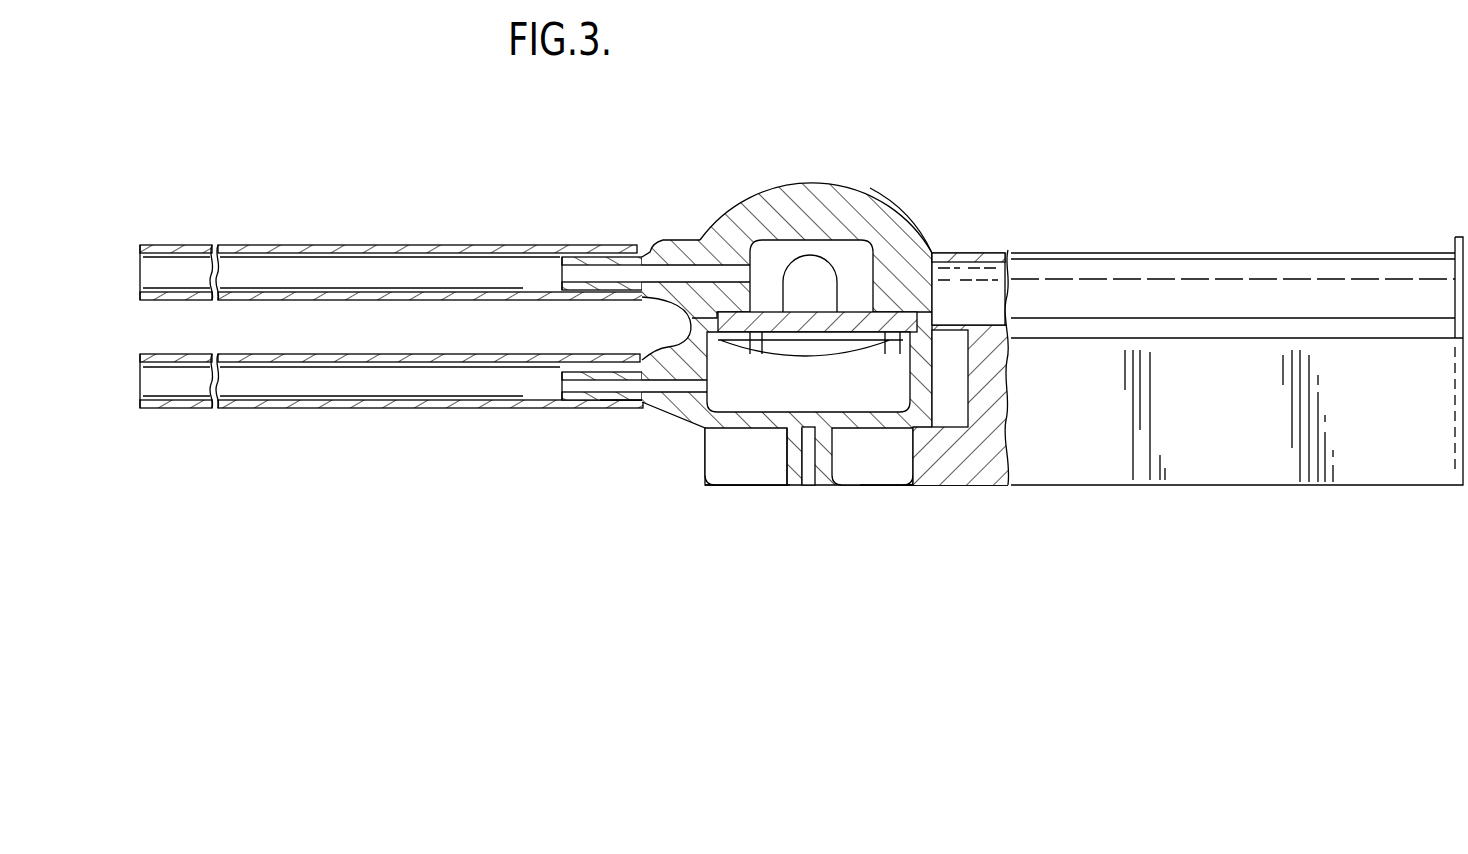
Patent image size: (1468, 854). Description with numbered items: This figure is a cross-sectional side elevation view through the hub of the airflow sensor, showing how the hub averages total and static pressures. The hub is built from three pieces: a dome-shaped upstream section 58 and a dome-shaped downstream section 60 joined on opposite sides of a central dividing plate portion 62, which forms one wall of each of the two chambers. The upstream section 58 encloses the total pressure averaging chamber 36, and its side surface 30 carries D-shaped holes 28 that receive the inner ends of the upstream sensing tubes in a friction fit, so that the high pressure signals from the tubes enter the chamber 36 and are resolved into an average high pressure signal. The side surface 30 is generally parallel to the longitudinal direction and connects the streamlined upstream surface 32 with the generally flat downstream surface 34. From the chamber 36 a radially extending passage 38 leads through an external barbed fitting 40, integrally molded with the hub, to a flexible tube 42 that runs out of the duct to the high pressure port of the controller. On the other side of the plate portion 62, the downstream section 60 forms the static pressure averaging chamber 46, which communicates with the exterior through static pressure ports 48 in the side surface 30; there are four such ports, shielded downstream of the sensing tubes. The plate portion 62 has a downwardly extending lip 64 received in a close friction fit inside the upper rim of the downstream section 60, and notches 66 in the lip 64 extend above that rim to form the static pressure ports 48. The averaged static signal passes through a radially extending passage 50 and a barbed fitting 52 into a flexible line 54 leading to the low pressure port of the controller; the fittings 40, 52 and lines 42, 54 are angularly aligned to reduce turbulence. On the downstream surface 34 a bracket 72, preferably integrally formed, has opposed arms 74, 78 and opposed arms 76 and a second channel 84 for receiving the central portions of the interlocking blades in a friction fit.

The holes 28 is at (822, 301).
The side surface 30 is at (1003, 338).
The streamlined upstream surface 32 is at (848, 183).
The flat downstream surface 34 is at (745, 430).
The total pressure averaging chamber 36 is at (763, 240).
The radially extending passage 38 is at (672, 262).
The external barbed fitting 40 is at (578, 258).
The flexible tube 42 is at (409, 245).
The static pressure averaging chamber 46 is at (845, 395).
The static pressure port 48 is at (756, 343).
The radially extending passage 50 is at (616, 392).
The barbed fitting 52 is at (590, 368).
The flexible line 54 is at (400, 410).
The upstream section 58 is at (918, 215).
The downstream section 60 is at (672, 418).
The dividing plate portion 62 is at (927, 315).
The lip 64 is at (902, 428).
The notches 66 is at (753, 352).
The bracket 72 is at (757, 487).
The arm 74 is at (715, 487).
The arm 76 is at (773, 487).
The arm 78 is at (892, 487).
The second channel 84 is at (808, 487).